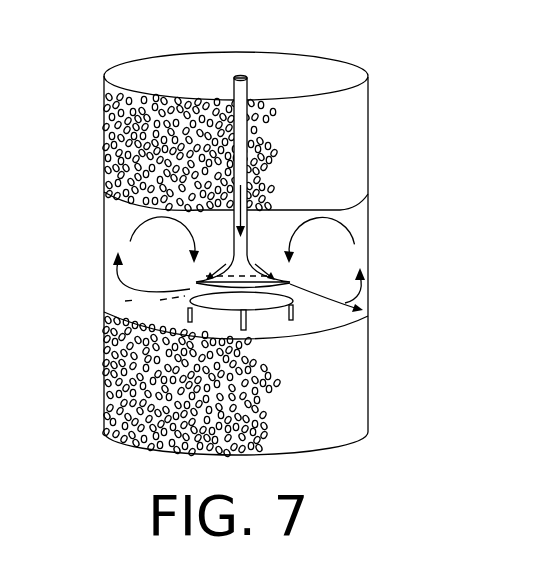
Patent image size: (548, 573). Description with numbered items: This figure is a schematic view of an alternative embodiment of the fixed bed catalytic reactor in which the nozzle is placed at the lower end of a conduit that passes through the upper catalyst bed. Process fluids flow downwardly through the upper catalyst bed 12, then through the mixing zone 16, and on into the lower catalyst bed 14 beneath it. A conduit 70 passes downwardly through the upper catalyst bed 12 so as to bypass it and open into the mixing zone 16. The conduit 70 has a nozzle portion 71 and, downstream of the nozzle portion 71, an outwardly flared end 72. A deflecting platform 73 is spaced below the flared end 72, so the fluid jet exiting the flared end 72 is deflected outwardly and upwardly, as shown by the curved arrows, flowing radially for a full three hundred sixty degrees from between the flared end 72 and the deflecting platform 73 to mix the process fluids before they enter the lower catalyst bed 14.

The upper catalyst bed 12 is at (112, 135).
The lower catalyst bed 14 is at (110, 373).
The mixing zone 16 is at (122, 229).
The conduit 70 is at (247, 116).
The nozzle portion 71 is at (245, 243).
The outwardly flared end 72 is at (360, 307).
The deflecting platform 73 is at (275, 318).